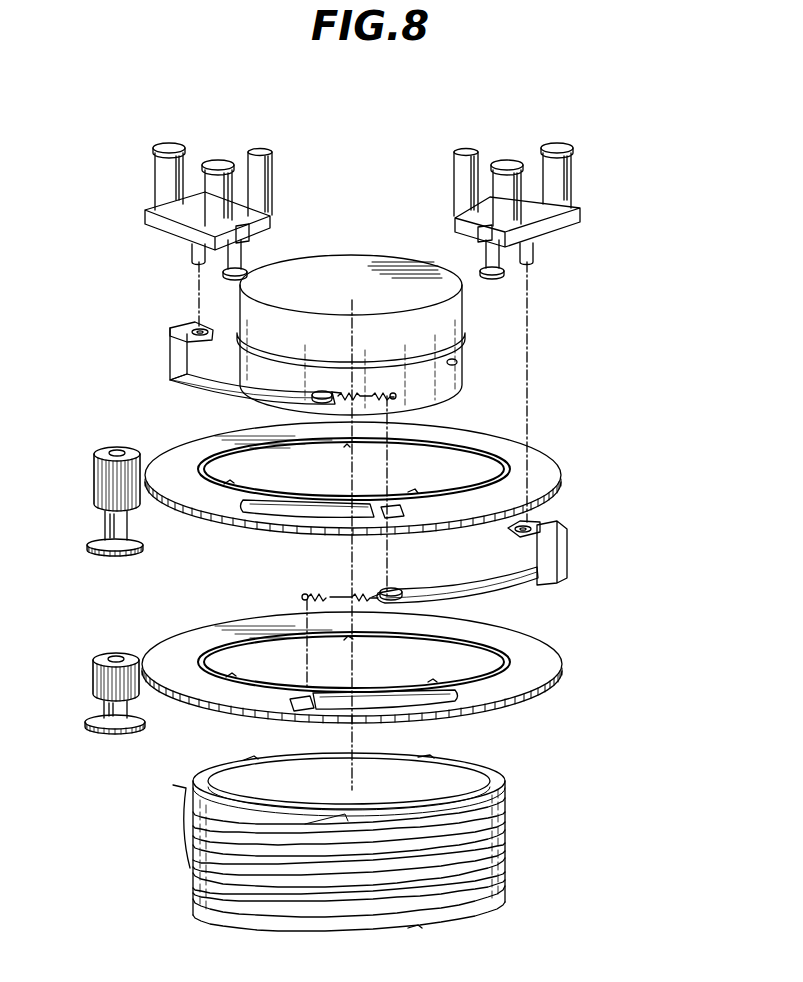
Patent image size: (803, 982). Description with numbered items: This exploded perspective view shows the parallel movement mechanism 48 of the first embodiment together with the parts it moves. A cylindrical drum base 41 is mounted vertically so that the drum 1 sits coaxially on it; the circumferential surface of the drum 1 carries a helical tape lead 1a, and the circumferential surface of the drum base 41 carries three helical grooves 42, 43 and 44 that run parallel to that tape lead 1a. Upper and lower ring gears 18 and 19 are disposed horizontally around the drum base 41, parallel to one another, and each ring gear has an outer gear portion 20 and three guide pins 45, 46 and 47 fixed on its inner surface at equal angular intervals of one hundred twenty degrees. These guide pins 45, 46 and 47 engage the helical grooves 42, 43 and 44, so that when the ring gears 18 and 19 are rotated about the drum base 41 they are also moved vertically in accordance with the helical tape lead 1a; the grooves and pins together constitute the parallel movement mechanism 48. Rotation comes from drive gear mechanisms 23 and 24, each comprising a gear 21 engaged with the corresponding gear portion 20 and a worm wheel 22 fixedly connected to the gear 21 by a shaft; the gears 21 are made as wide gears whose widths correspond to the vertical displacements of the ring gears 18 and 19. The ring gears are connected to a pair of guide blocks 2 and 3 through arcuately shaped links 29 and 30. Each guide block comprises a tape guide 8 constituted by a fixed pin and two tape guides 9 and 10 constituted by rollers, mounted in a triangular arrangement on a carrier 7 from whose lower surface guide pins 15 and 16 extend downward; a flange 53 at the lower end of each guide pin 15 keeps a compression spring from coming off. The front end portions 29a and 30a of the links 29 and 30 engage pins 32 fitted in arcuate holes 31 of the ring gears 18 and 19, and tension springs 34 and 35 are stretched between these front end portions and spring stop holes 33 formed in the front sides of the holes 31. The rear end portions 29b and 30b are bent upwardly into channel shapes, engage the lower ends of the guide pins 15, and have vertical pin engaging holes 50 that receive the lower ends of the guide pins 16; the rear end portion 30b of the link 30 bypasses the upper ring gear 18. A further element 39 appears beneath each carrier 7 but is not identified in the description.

The drum 1 is at (372, 262).
The tape lead 1a is at (456, 362).
The guide block 2 is at (284, 183).
The guide block 3 is at (584, 186).
The carrier 7 is at (268, 222).
The tape guide 8 is at (262, 148).
The tape guide 9 is at (218, 162).
The tape guide 10 is at (166, 145).
The guide pin 15 is at (242, 262).
The guide pin 16 is at (192, 252).
The upper ring gear 18 is at (540, 472).
The lower ring gear 19 is at (562, 662).
The outer gear portion 20 is at (482, 528).
The gear 21 is at (116, 448).
The worm wheel 22 is at (140, 553).
The drive gear mechanism 23 is at (92, 514).
The drive gear mechanism 24 is at (88, 712).
The link 29 is at (180, 390).
The front end portion 29a is at (340, 392).
The rear end portion 29b is at (167, 350).
The link 30 is at (498, 590).
The front end portion 30a is at (384, 590).
The rear end portion 30b is at (562, 556).
The arcuate hole 31 is at (262, 516).
The pin 32 is at (318, 392).
The spring stop hole 33 is at (404, 514).
The tension spring 34 is at (396, 398).
The tension spring 35 is at (304, 594).
The block 39 is at (249, 234).
The drum base 41 is at (505, 778).
The helical groove 42 is at (346, 814).
The helical groove 43 is at (440, 810).
The helical groove 44 is at (167, 819).
The guide pin 45 is at (234, 482).
The guide pin 46 is at (414, 492).
The guide pin 47 is at (346, 448).
The parallel movement mechanism 48 is at (604, 612).
The pin engaging hole 50 is at (193, 329).
The flange 53 is at (234, 277).